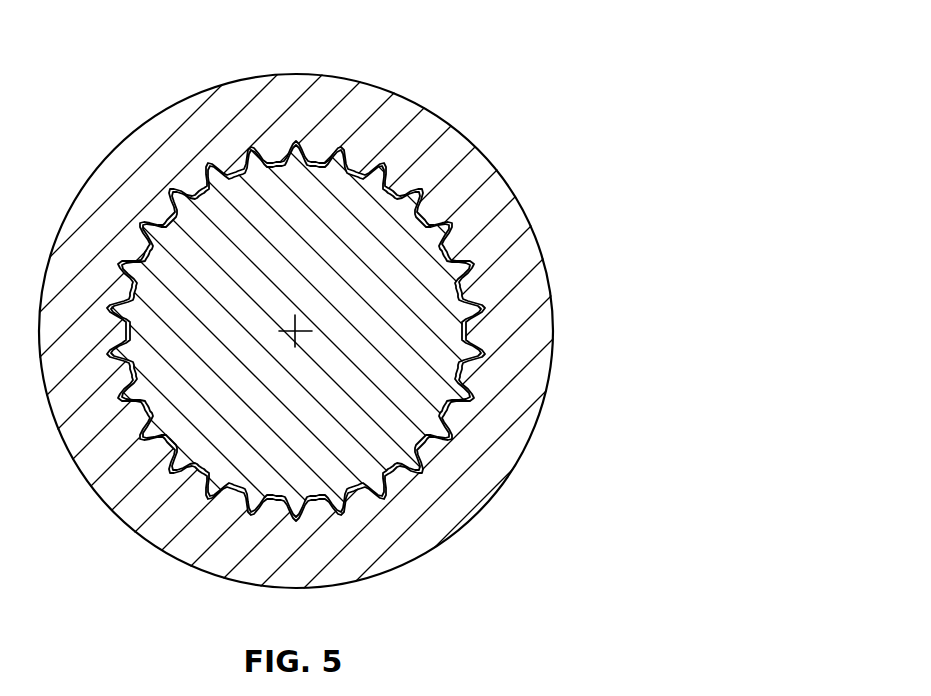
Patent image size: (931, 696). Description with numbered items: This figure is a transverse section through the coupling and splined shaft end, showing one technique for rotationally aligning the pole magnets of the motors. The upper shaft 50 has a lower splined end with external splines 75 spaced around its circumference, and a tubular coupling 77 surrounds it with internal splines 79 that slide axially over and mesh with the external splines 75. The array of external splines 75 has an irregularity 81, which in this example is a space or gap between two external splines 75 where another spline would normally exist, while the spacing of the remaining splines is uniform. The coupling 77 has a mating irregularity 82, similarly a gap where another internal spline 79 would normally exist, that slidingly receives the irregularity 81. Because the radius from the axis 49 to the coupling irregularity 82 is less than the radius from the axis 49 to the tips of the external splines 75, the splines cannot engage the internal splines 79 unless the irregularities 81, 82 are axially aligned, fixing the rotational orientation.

The axis 49 is at (300, 328).
The upper shaft 50 is at (230, 452).
The external splines 75 is at (388, 478).
The tubular coupling 77 is at (176, 100).
The internal splines 79 is at (448, 415).
The irregularity 81 is at (318, 162).
The mating irregularity 82 is at (331, 177).